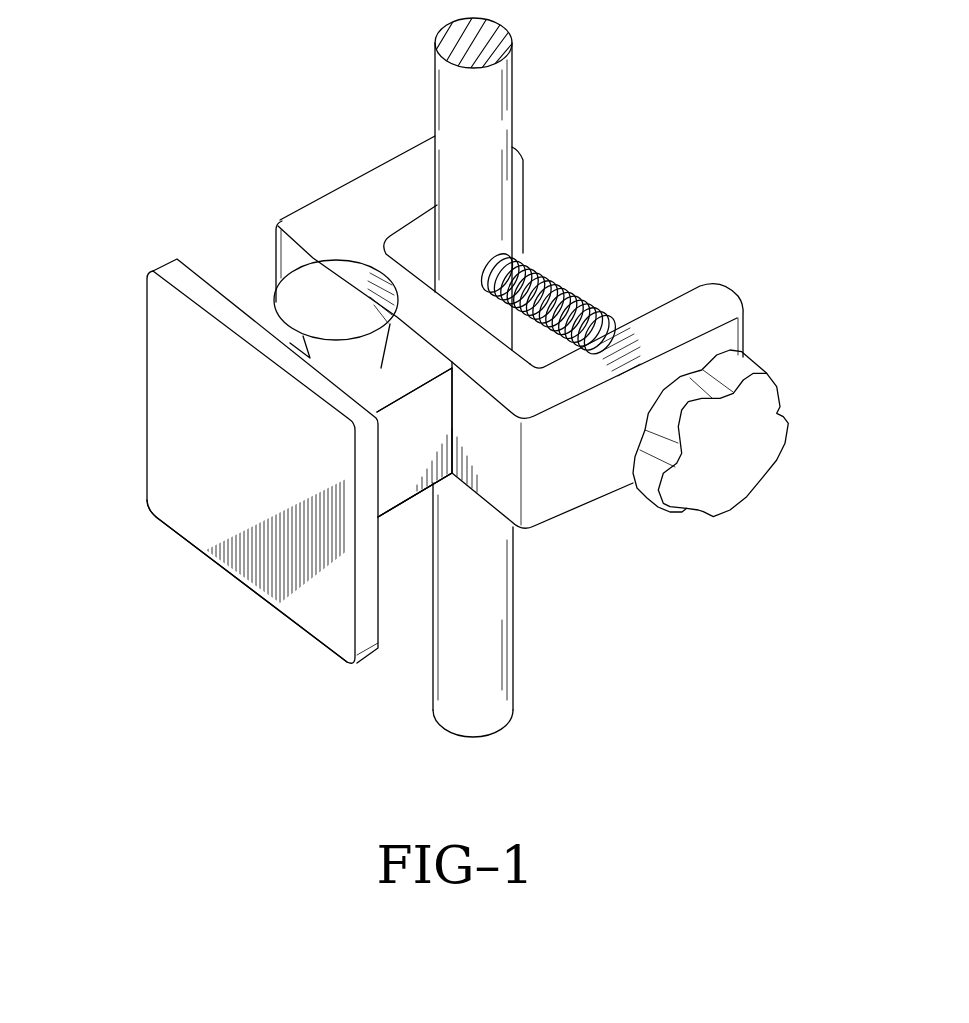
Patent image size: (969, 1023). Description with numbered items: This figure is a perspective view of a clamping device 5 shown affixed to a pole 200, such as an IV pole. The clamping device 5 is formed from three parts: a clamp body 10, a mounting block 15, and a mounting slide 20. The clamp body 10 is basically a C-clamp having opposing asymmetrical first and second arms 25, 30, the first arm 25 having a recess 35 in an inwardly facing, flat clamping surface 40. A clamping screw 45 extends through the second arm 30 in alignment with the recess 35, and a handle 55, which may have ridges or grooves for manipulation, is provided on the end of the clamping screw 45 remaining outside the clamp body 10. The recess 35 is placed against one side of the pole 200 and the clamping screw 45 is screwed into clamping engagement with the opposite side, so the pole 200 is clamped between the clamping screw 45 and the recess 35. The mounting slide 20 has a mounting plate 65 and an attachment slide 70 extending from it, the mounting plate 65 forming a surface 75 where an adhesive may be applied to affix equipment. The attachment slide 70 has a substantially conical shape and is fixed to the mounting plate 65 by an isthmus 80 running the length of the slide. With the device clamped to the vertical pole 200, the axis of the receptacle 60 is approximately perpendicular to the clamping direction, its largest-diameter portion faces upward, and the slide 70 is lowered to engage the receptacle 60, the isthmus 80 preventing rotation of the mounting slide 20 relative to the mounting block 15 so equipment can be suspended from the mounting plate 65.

The clamping device 5 is at (226, 112).
The clamp body 10 is at (605, 502).
The mounting block 15 is at (405, 507).
The mounting slide 20 is at (145, 405).
The first arm 25 is at (374, 190).
The second arm 30 is at (710, 305).
The recess 35 is at (436, 204).
The flat clamping surface 40 is at (407, 245).
The clamping screw 45 is at (583, 302).
The handle 55 is at (755, 488).
The receptacle 60 is at (368, 380).
The mounting plate 65 is at (330, 637).
The attachment slide 70 is at (313, 283).
The surface 75 is at (251, 473).
The isthmus 80 is at (275, 325).
The pole 200 is at (512, 100).